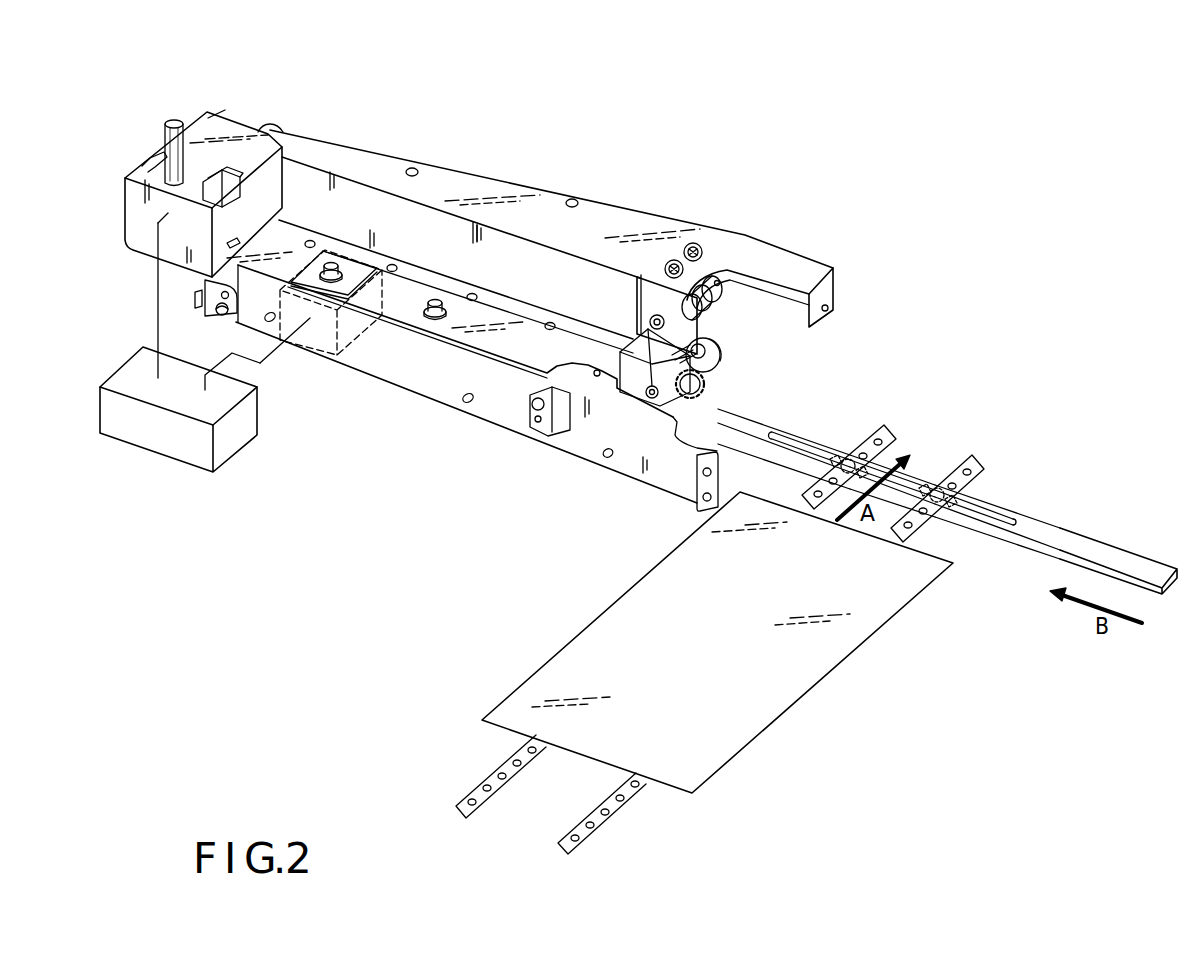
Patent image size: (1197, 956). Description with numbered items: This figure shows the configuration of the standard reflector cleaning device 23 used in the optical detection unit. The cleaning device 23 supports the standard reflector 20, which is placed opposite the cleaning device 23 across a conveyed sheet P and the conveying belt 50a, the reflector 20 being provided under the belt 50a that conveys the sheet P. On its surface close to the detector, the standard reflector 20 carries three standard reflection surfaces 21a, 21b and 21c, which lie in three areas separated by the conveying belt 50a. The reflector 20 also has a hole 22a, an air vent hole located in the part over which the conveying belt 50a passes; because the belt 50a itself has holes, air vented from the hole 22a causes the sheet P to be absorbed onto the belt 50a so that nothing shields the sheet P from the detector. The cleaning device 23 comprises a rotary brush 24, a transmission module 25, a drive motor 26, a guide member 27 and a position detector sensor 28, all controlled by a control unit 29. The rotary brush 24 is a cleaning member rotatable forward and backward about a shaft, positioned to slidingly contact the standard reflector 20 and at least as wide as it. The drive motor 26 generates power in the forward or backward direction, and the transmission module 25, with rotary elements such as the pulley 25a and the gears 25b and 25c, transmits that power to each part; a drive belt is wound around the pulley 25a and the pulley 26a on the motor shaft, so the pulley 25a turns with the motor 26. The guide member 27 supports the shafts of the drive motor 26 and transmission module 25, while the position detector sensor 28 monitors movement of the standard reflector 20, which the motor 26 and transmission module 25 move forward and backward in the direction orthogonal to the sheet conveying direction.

The standard reflector 20 is at (1071, 544).
The standard reflection surface 21a is at (982, 512).
The standard reflection surface 21b is at (880, 462).
The standard reflection surface 21c is at (806, 444).
The hole 22a is at (849, 456).
The standard reflector cleaning device 23 is at (545, 187).
The rotary brush 24 is at (700, 390).
The transmission module 25 is at (736, 338).
The pulley 25a is at (722, 258).
The gear 25b is at (702, 318).
The gear 25c is at (721, 356).
The drive motor 26 is at (231, 130).
The pulley 26a is at (278, 128).
The guide member 27 is at (621, 202).
The position detector sensor 28 is at (297, 343).
The control unit 29 is at (150, 447).
The conveying belt 50a is at (498, 762).
The sheet P is at (818, 682).